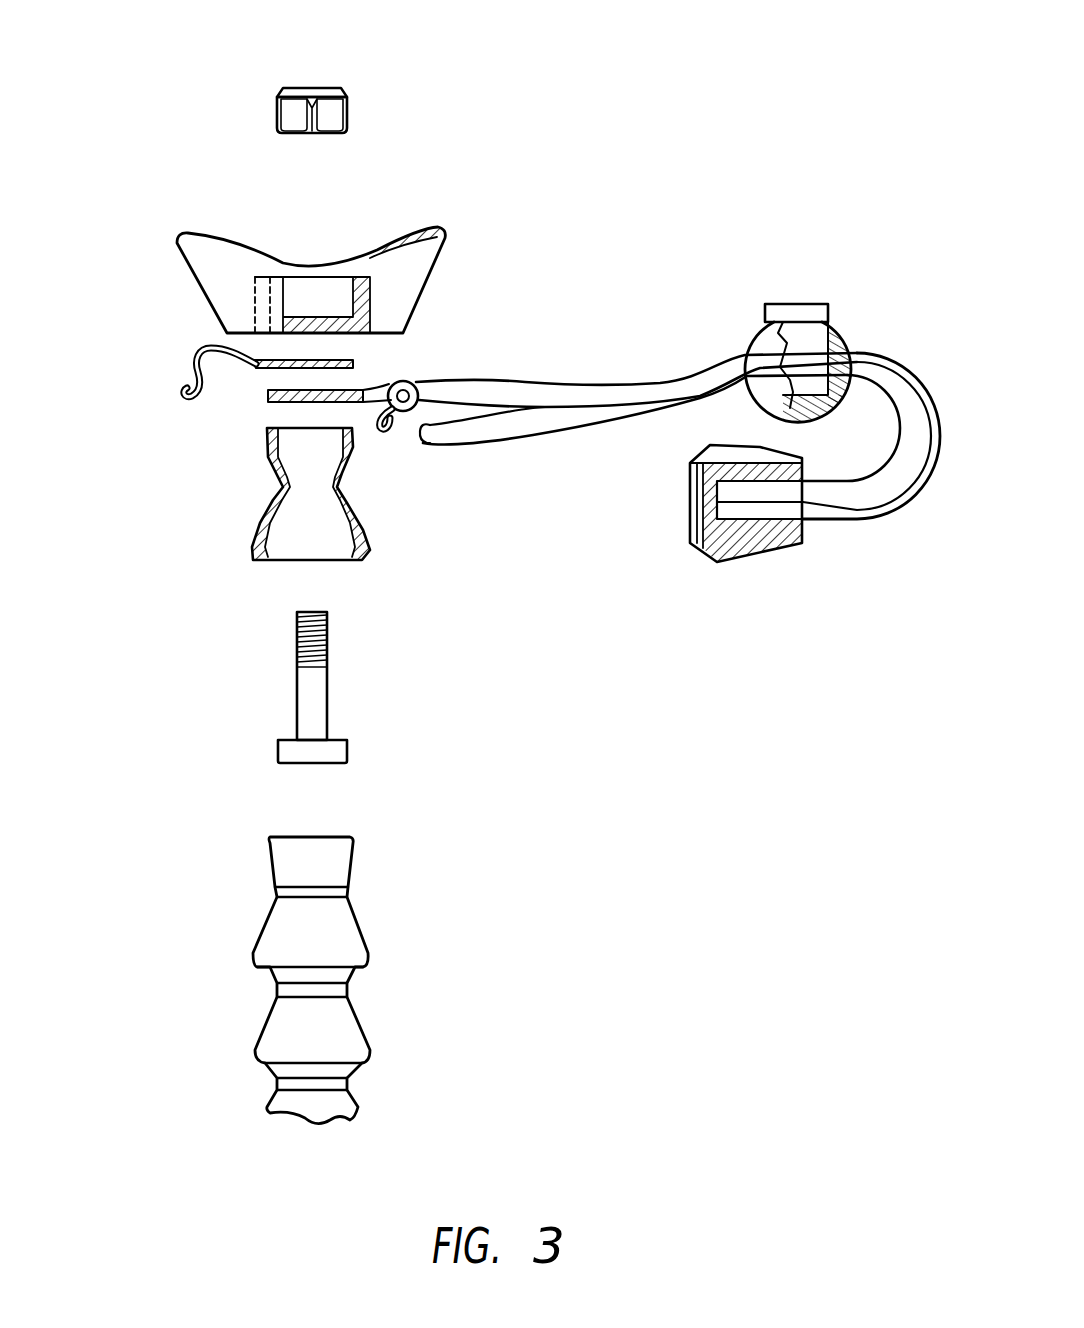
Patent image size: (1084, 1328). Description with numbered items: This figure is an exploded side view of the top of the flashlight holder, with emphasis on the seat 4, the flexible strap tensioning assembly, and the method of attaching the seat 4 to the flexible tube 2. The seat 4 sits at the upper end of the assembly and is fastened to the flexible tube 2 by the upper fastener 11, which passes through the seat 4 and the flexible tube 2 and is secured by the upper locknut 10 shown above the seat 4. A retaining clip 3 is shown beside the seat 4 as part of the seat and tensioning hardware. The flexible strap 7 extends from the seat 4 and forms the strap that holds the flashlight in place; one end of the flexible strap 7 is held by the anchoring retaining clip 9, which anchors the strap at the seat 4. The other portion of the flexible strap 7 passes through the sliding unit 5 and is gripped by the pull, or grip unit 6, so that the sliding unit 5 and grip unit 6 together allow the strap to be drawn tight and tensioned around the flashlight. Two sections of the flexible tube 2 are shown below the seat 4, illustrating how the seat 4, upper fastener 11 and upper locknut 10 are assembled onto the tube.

The flexible tube 2 is at (373, 550).
The retaining clip 3 is at (183, 400).
The seat 4 is at (210, 280).
The sliding unit 5 is at (806, 296).
The grip unit 6 is at (737, 548).
The flexible strap 7 is at (522, 392).
The anchoring retaining clip 9 is at (408, 380).
The locknut 10 is at (310, 100).
The upper fastener 11 is at (307, 673).